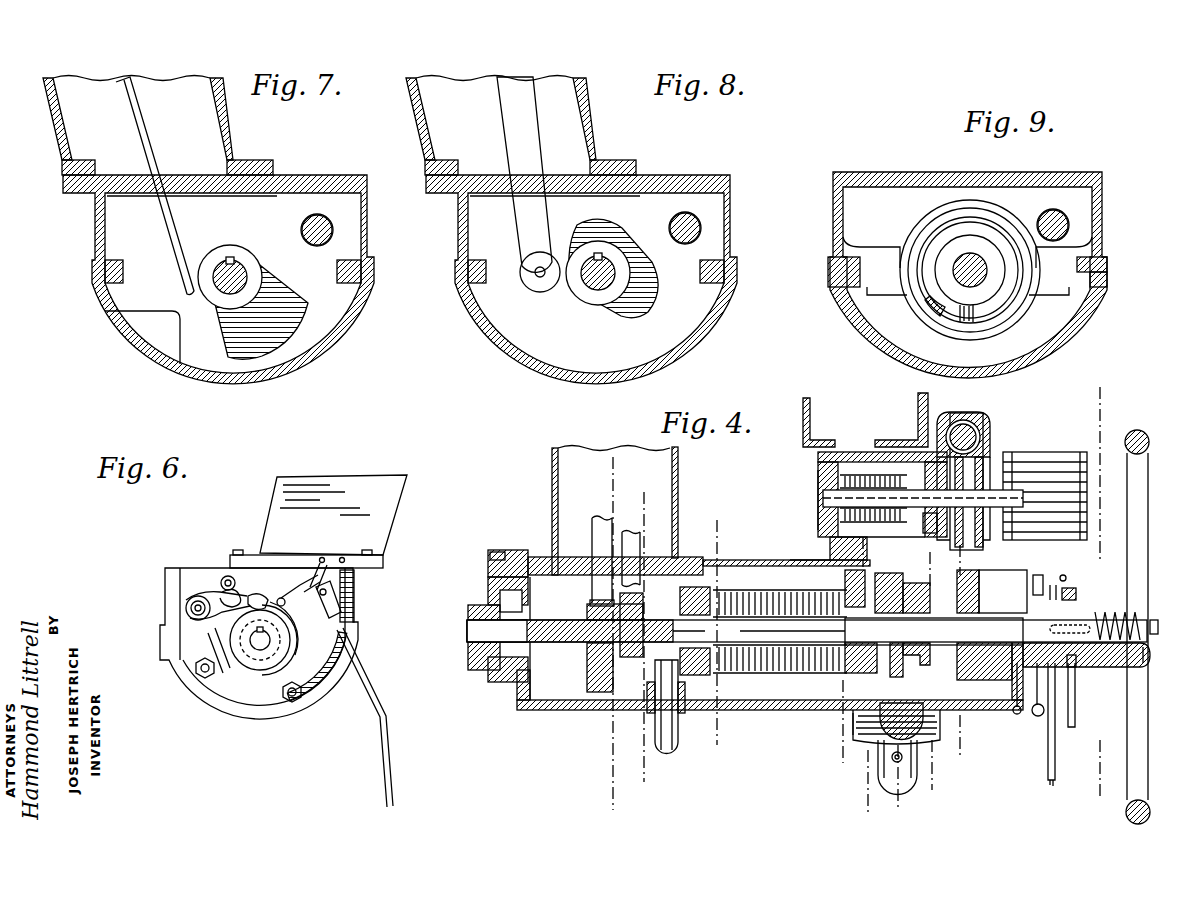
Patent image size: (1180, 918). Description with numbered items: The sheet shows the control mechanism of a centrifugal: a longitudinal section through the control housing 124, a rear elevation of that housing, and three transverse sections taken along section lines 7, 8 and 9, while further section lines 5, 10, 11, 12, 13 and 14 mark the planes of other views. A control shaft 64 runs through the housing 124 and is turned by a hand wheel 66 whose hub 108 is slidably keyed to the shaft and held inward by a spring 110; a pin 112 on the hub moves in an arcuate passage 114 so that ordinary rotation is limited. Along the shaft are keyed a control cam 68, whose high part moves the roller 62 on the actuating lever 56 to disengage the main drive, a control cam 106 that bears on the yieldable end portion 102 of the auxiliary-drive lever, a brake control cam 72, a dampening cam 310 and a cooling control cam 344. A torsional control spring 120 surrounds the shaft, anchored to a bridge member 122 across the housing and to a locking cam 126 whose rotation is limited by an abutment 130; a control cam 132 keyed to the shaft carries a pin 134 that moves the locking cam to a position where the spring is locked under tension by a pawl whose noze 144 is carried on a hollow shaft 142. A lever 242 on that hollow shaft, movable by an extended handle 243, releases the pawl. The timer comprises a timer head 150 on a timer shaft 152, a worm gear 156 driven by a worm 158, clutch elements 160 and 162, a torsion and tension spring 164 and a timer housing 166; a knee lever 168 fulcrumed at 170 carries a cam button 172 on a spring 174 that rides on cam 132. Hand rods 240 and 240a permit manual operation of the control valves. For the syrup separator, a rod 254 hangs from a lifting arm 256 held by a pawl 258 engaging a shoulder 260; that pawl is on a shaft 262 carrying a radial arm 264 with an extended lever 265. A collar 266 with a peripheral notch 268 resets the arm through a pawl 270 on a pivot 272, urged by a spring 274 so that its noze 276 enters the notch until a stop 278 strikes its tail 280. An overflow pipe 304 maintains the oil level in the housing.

In FIG. 4, the section line 5- 5 is at (1102, 798).
In FIG. 4, the section line 7— 7 is at (615, 802).
In FIG. 4, the section line 8— 8 is at (646, 767).
In FIG. 4, the section line 9— 9 is at (719, 733).
In FIG. 4, the section line 10- 10 is at (841, 763).
In FIG. 4, the section line 11- 11 is at (866, 783).
In FIG. 4, the section line 12- 12 is at (900, 800).
In FIG. 4, the section line 13- 13 is at (934, 778).
In FIG. 4, the section line 14- 14 is at (958, 750).
In FIG. 8, the actuating lever 56 is at (510, 108).
In FIG. 4, the actuating lever 56 is at (641, 551).
In FIG. 8, the roller 62 is at (529, 288).
In FIG. 7, the control shaft 64 is at (233, 260).
In FIG. 8, the control shaft 64 is at (595, 283).
In FIG. 6, the control shaft 64 is at (262, 650).
In FIG. 4, the control shaft 64 is at (993, 730).
In FIG. 4, the hand wheel 66 is at (1145, 435).
In FIG. 8, the control cam 68 is at (643, 306).
In FIG. 4, the control cam 68 is at (628, 658).
In FIG. 4, the control cam 72 is at (935, 660).
In FIG. 7, the yieldable end portion 102 is at (173, 233).
In FIG. 4, the yieldable end portion 102 is at (593, 540).
In FIG. 7, the control cam 106 is at (296, 318).
In FIG. 4, the control cam 106 is at (588, 680).
In FIG. 4, the hub 108 is at (1115, 668).
In FIG. 4, the spring 110 is at (1150, 660).
In FIG. 4, the pin 112 is at (1076, 664).
In FIG. 4, the arcuate passage 114 is at (1038, 576).
In FIG. 4, the control spring 120 is at (768, 590).
In FIG. 9, the bridge member 122 is at (1021, 308).
In FIG. 4, the bridge member 122 is at (688, 585).
In FIG. 7, the housing 124 is at (290, 370).
In FIG. 8, the housing 124 is at (688, 345).
In FIG. 9, the housing 124 is at (1095, 318).
In FIG. 6, the housing 124 is at (182, 690).
In FIG. 4, the housing 124 is at (775, 712).
In FIG. 4, the locking cam 126 is at (845, 583).
In FIG. 4, the abutment 130 is at (855, 700).
In FIG. 4, the control cam 132 is at (892, 780).
In FIG. 4, the pin 134 is at (853, 730).
In FIG. 7, the hollow shaft 142 is at (333, 229).
In FIG. 8, the hollow shaft 142 is at (701, 227).
In FIG. 9, the hollow shaft 142 is at (1068, 224).
In FIG. 4, the hollow shaft 142 is at (1078, 575).
In FIG. 4, the noze 144 is at (786, 560).
In FIG. 4, the timer head 150 is at (1075, 455).
In FIG. 4, the timer shaft 152 is at (855, 452).
In FIG. 4, the worm gear 156 is at (985, 435).
In FIG. 4, the worm 158 is at (968, 420).
In FIG. 4, the clutch element 160 is at (937, 448).
In FIG. 4, the clutch element 162 is at (943, 425).
In FIG. 4, the torsion and tension spring 164 is at (870, 474).
In FIG. 4, the timer housing 166 is at (840, 455).
In FIG. 4, the knee lever 168 is at (890, 488).
In FIG. 4, the fulcrum 170 is at (923, 530).
In FIG. 4, the cam button 172 is at (830, 550).
In FIG. 4, the spring 174 is at (830, 528).
In FIG. 4, the hand rod 240 is at (1030, 716).
In FIG. 4, the hand rod 240a is at (1050, 740).
In FIG. 4, the lever 242 is at (1066, 576).
In FIG. 4, the extended handle 243 is at (1052, 786).
In FIG. 6, the rod 254 is at (393, 765).
In FIG. 6, the lifting arm 256 is at (340, 640).
In FIG. 4, the lifting arm 256 is at (492, 590).
In FIG. 6, the pawl 258 is at (215, 590).
In FIG. 4, the pawl 258 is at (490, 596).
In FIG. 6, the shoulder 260 is at (232, 590).
In FIG. 7, the shaft 262 is at (315, 215).
In FIG. 8, the shaft 262 is at (684, 213).
In FIG. 9, the shaft 262 is at (1046, 214).
In FIG. 6, the shaft 262 is at (186, 603).
In FIG. 4, the shaft 262 is at (1078, 594).
In FIG. 4, the radial arm 264 is at (1060, 586).
In FIG. 4, the extended lever 265 is at (1076, 718).
In FIG. 6, the collar 266 is at (268, 660).
In FIG. 4, the collar 266 is at (475, 665).
In FIG. 6, the peripheral notch 268 is at (290, 650).
In FIG. 6, the pawl 270 is at (262, 598).
In FIG. 6, the pivot 272 is at (282, 596).
In FIG. 6, the spring 274 is at (354, 593).
In FIG. 6, the noze 276 is at (228, 672).
In FIG. 6, the stop 278 is at (308, 580).
In FIG. 6, the tail 280 is at (320, 590).
In FIG. 4, the overflow pipe 304 is at (685, 715).
In FIG. 4, the dampening cam 310 is at (905, 660).
In FIG. 4, the cooling control cam 344 is at (910, 678).